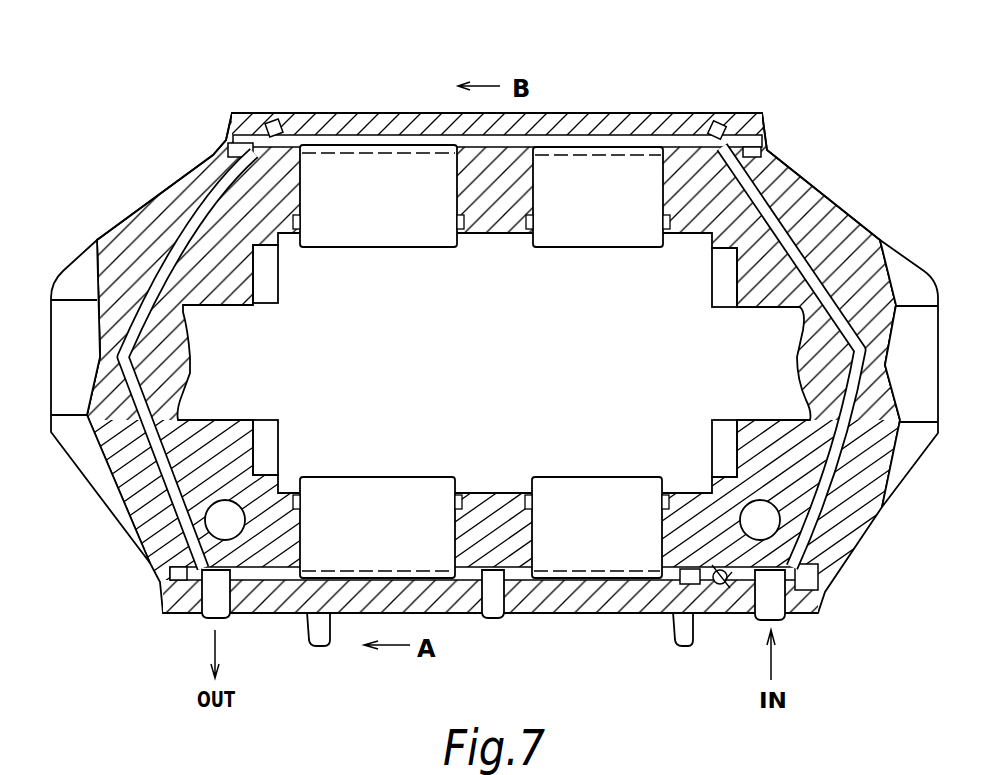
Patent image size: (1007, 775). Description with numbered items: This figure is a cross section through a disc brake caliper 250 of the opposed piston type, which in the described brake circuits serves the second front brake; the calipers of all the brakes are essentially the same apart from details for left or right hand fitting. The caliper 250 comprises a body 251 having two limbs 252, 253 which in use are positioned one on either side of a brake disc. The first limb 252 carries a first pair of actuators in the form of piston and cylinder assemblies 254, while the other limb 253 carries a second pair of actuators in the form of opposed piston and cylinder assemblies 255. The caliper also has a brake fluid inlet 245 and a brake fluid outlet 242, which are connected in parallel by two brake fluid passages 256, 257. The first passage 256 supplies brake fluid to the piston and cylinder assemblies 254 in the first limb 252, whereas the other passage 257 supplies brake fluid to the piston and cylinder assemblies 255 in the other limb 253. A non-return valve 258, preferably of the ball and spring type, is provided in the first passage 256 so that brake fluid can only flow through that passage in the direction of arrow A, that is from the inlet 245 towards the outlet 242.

The caliper 250 is at (278, 83).
The body 251 is at (175, 213).
The first limb 252 is at (273, 597).
The other limb 253 is at (612, 133).
The piston and cylinder assemblies 254 is at (377, 495).
The opposed piston and cylinder assemblies 255 is at (373, 228).
The first brake fluid passage 256 is at (518, 582).
The other brake fluid passage 257 is at (767, 207).
The non-return valve 258 is at (707, 592).
The brake fluid outlet 242 is at (212, 606).
The brake fluid inlet 245 is at (774, 606).